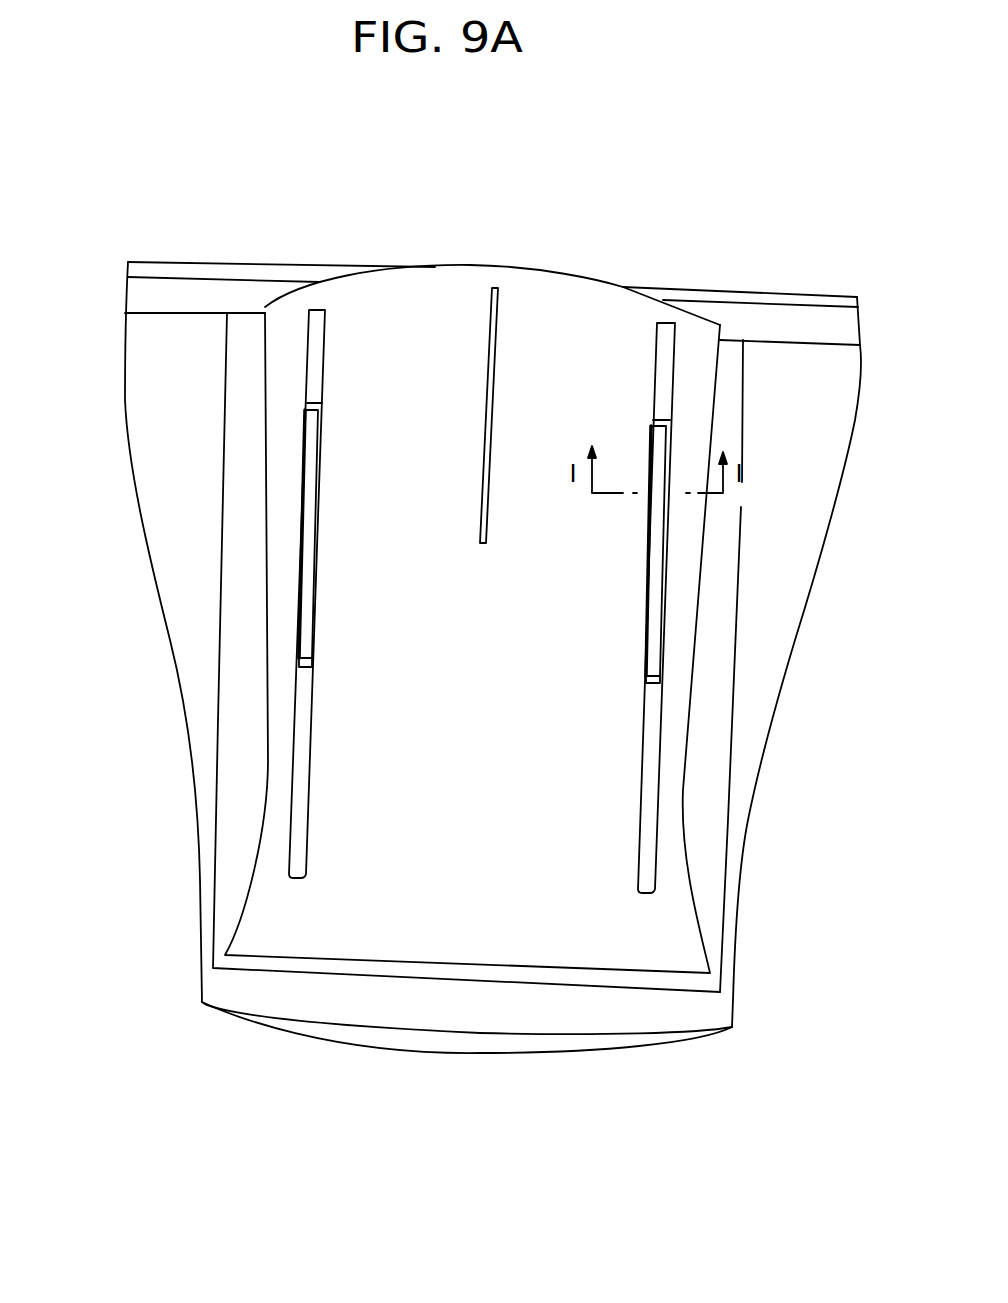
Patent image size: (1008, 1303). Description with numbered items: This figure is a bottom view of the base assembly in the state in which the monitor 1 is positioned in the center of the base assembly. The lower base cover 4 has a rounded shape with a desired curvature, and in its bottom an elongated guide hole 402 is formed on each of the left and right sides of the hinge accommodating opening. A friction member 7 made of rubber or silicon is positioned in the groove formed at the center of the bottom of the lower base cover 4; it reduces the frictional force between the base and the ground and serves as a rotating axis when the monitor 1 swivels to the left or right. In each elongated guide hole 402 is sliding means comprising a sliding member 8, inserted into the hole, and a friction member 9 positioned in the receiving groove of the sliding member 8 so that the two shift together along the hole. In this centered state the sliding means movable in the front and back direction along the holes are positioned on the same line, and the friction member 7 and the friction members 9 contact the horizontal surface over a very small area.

The monitor 1 is at (132, 373).
The lower base cover 4 is at (365, 942).
The friction member 7 is at (492, 313).
The sliding member 8 is at (305, 665).
The friction member 9 is at (310, 568).
The elongated guide hole 402 is at (315, 348).